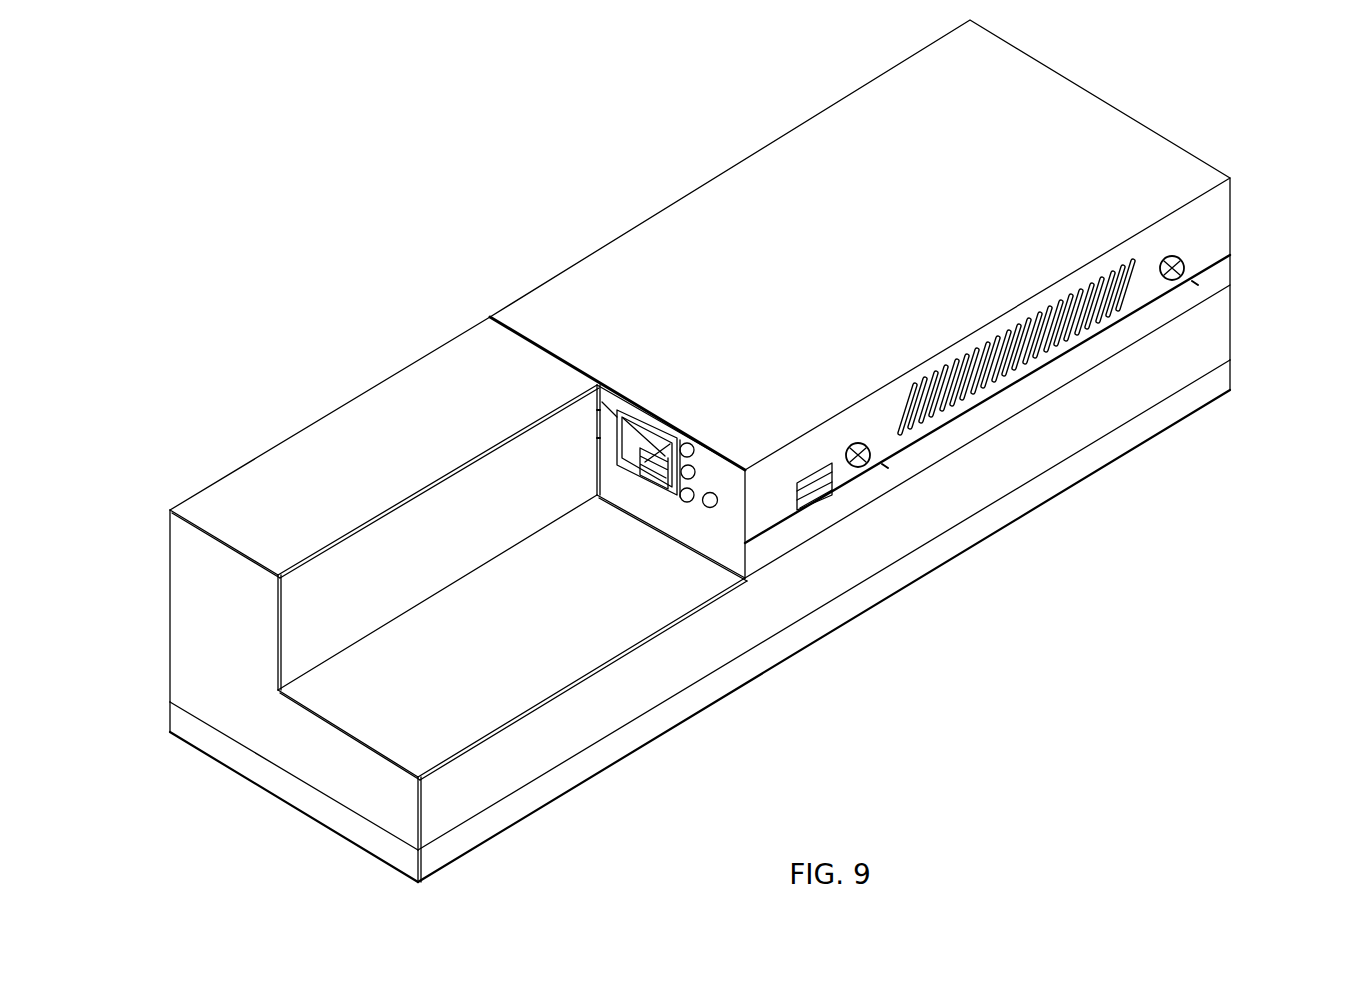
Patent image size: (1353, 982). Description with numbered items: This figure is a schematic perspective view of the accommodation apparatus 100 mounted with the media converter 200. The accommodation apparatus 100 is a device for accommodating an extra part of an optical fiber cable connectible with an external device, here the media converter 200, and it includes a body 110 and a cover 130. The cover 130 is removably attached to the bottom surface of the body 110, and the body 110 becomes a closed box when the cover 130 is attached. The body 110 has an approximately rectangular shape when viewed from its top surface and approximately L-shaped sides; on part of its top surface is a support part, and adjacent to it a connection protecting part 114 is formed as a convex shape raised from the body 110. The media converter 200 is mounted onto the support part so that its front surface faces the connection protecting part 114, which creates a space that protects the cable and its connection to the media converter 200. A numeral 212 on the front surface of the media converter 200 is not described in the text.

The accommodation apparatus 100 is at (700, 568).
The body 110 is at (700, 552).
The connection protecting part 114 is at (372, 500).
The cover 130 is at (722, 683).
The media converter 200 is at (884, 299).
The front panel 212 is at (577, 367).